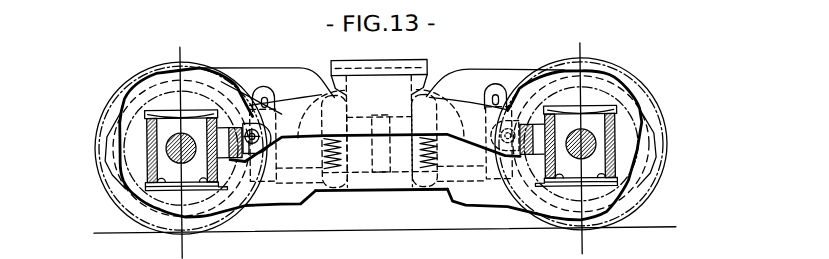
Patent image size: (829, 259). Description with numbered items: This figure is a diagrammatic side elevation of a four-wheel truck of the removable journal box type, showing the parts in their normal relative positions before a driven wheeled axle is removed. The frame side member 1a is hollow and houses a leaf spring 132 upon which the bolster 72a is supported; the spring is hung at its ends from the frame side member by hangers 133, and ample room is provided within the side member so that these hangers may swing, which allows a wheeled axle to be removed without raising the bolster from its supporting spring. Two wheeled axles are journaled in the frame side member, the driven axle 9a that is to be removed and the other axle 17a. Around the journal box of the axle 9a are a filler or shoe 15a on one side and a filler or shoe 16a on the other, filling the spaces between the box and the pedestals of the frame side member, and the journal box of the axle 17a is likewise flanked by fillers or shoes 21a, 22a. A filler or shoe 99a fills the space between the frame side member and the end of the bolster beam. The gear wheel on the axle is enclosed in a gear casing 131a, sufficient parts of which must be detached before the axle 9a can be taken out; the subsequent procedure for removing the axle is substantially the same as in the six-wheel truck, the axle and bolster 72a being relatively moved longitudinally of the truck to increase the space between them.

The driven wheeled axle 9a is at (166, 145).
The axle 17a is at (597, 148).
The filler or shoe 15a is at (160, 182).
The filler or shoe 16a is at (205, 188).
The filler or shoe 21a is at (565, 180).
The filler or shoe 22a is at (599, 180).
The gear casing 131a is at (118, 177).
The filler or shoe 99a is at (518, 189).
The frame side member 1a is at (298, 177).
The leaf spring 132 is at (466, 161).
The bolster 72a is at (428, 64).
The hangers 133 is at (494, 89).